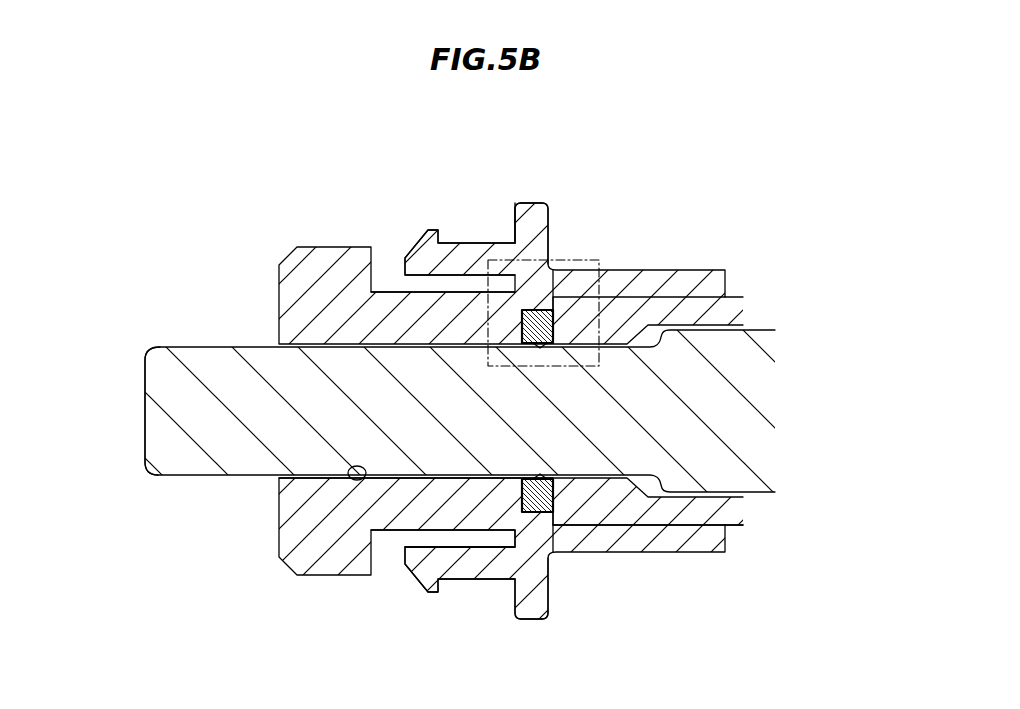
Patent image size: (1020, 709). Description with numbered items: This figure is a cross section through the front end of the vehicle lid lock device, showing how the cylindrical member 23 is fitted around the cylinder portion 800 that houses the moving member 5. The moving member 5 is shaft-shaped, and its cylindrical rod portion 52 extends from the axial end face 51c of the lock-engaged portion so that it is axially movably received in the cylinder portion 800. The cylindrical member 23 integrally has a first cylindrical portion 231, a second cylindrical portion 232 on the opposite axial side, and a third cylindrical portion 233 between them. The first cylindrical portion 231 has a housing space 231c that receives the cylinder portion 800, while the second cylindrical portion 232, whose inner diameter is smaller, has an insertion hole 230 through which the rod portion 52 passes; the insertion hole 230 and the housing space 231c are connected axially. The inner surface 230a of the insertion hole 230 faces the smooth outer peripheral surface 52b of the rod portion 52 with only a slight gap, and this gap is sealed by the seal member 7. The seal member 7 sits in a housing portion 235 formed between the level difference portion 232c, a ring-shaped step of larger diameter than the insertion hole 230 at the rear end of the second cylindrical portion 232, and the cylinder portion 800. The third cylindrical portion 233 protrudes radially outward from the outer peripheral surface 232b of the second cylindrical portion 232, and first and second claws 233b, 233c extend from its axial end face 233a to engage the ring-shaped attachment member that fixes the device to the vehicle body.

The moving member 5 is at (434, 387).
The rod portion 52 is at (160, 453).
The outer peripheral surface 52b is at (566, 340).
The cylindrical member 23 is at (481, 409).
The insertion hole 230 is at (462, 411).
The inner surface 230a is at (360, 471).
The second cylindrical portion 232 is at (399, 505).
The outer peripheral surface 232b is at (392, 291).
The level difference portion 232c is at (537, 303).
The third cylindrical portion 233 is at (469, 429).
The axial end face 233a is at (515, 223).
The first claw 233b is at (414, 248).
The second claw 233c is at (430, 586).
The seal member 7 is at (516, 530).
The axial end face 51c is at (712, 275).
The first cylindrical portion 231 is at (666, 558).
The housing space 231c is at (706, 526).
The housing portion 235 is at (551, 515).
The cylinder portion 800 is at (590, 352).